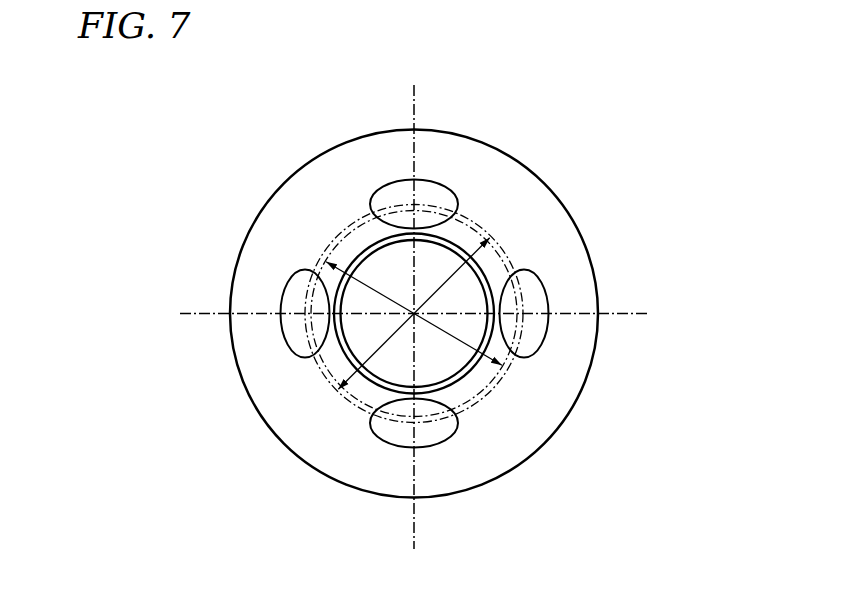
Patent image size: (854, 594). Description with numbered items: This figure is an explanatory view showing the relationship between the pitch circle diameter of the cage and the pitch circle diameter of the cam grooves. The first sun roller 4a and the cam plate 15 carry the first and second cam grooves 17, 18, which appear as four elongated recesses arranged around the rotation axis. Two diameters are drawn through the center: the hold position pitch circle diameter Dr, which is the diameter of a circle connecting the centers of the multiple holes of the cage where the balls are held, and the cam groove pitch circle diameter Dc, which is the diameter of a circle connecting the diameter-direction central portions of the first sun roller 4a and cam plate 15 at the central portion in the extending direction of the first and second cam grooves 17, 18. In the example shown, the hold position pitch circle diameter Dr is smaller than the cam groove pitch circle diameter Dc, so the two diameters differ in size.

The first sun roller 4a is at (463, 314).
The cam plate 15 is at (578, 250).
The first cam groove 17 is at (427, 318).
The second cam groove 18 is at (398, 180).
The cam groove pitch circle diameter Dc is at (472, 253).
The hold position pitch circle diameter Dr is at (463, 343).